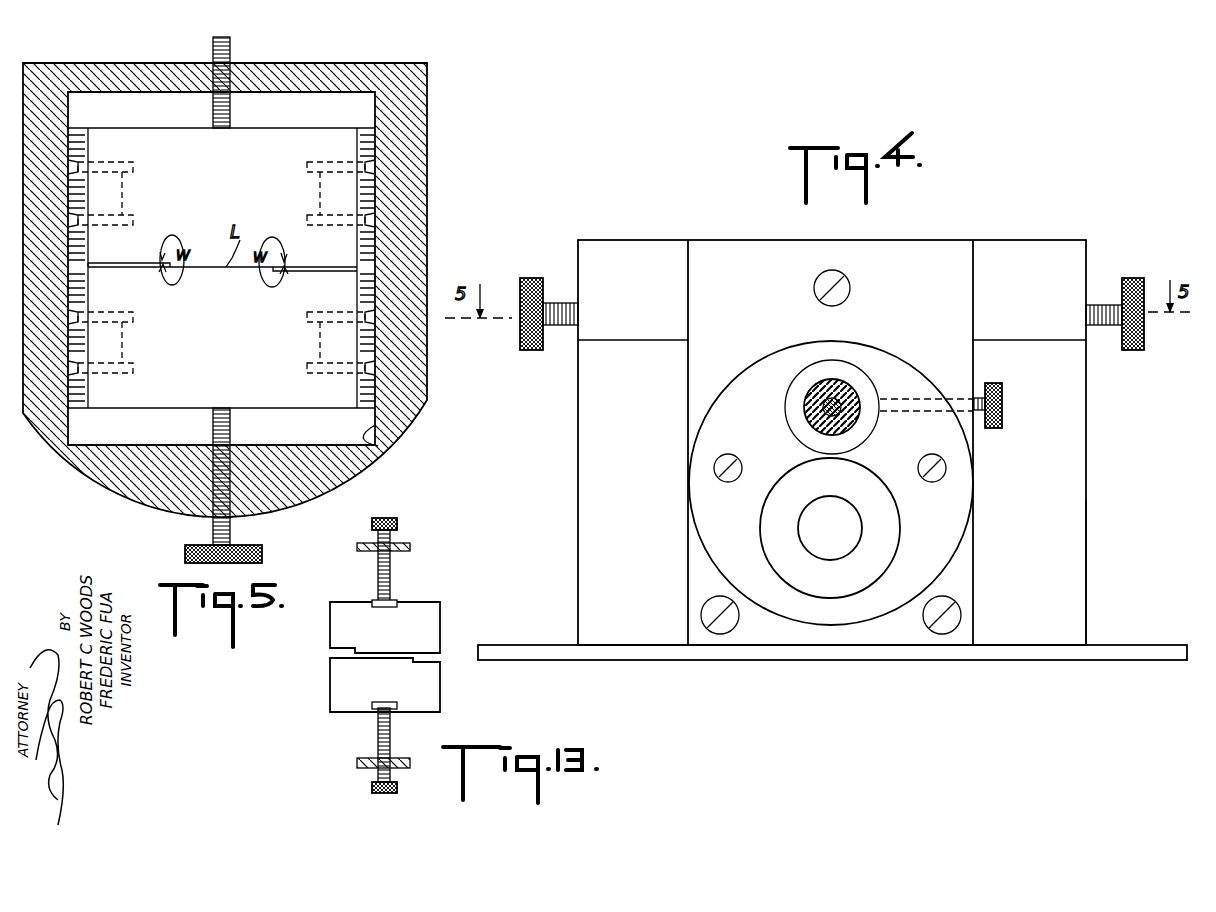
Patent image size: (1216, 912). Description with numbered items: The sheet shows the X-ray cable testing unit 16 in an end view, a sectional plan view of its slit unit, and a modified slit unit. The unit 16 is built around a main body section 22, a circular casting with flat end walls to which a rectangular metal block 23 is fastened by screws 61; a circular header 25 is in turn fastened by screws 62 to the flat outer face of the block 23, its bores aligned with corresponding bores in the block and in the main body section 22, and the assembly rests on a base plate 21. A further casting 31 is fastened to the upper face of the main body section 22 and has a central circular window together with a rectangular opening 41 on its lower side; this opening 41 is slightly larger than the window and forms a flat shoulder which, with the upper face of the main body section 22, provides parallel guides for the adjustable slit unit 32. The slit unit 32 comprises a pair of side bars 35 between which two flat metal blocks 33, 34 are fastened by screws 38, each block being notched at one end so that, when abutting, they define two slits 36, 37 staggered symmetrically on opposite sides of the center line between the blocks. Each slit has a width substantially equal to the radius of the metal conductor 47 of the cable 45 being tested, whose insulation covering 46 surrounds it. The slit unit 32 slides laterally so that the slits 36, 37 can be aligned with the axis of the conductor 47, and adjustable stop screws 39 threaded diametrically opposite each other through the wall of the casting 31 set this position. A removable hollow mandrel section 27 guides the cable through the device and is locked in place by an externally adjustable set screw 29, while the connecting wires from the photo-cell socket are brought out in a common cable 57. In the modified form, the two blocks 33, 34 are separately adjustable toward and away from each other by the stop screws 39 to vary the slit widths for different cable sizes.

In FIG. 4, the unit 16 is at (1090, 462).
In FIG. 4, the base plate 21 is at (768, 651).
In FIG. 4, the main body section 22 is at (1088, 578).
In FIG. 4, the rectangular metal block 23 is at (960, 237).
In FIG. 4, the circular header 25 is at (762, 388).
In FIG. 4, the mandrel section 27 is at (843, 372).
In FIG. 4, the set screw 29 is at (1003, 398).
In FIG. 5, the casting 31 is at (408, 183).
In FIG. 4, the casting 31 is at (1028, 252).
In FIG. 5, the adjustable slit unit 32 is at (332, 148).
In FIG. 5, the flat metal block 33 is at (242, 194).
In FIG. 13, the flat metal block 33 is at (397, 637).
In FIG. 5, the flat metal block 34 is at (236, 348).
In FIG. 13, the flat metal block 34 is at (397, 693).
In FIG. 5, the side bar 35 is at (88, 243).
In FIG. 5, the slit 36 is at (148, 270).
In FIG. 5, the slit 37 is at (300, 272).
In FIG. 5, the screw 38 is at (314, 205).
In FIG. 5, the adjustable stop screw 39 is at (231, 46).
In FIG. 4, the adjustable stop screw 39 is at (530, 278).
In FIG. 13, the adjustable stop screw 39 is at (388, 520).
In FIG. 5, the rectangular opening 41 is at (362, 441).
In FIG. 4, the cable 45 is at (820, 378).
In FIG. 4, the insulation covering 46 is at (804, 403).
In FIG. 4, the metal conductor 47 is at (858, 418).
In FIG. 4, the cable 57 is at (850, 532).
In FIG. 4, the screw 61 is at (843, 291).
In FIG. 4, the screw 62 is at (740, 466).